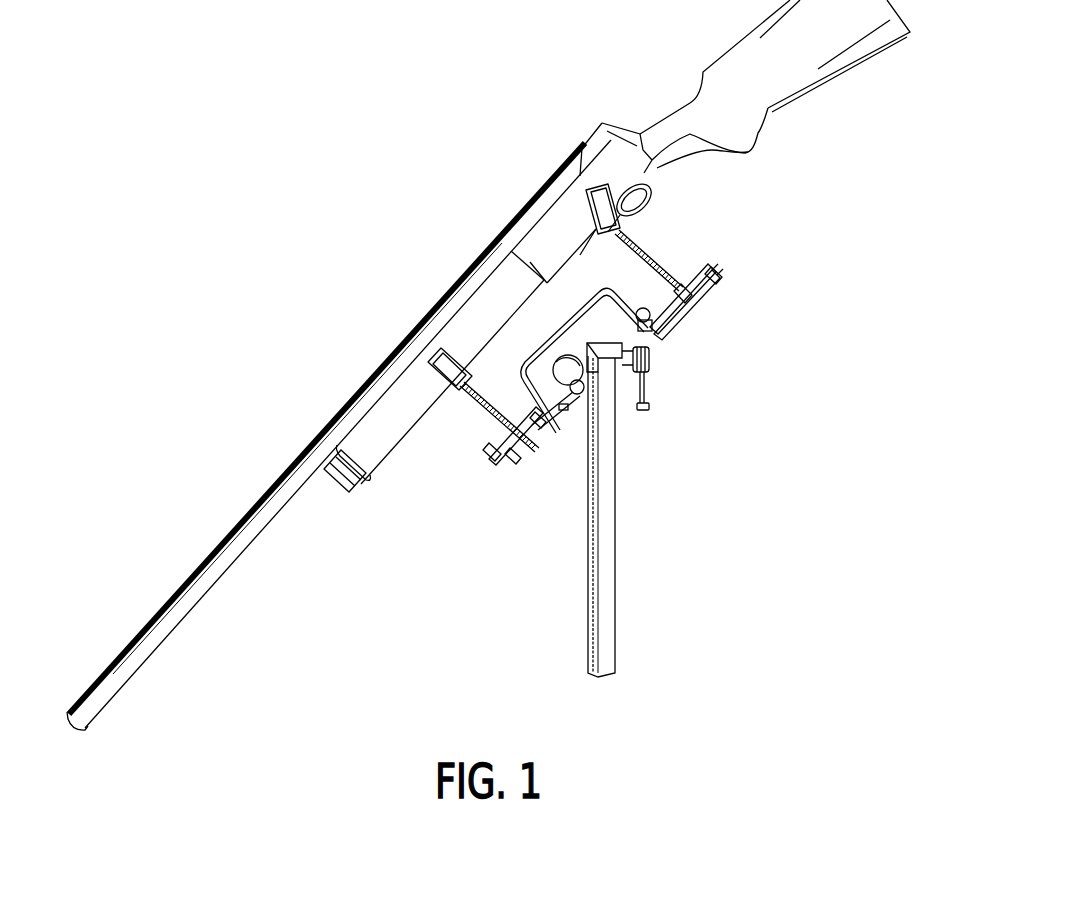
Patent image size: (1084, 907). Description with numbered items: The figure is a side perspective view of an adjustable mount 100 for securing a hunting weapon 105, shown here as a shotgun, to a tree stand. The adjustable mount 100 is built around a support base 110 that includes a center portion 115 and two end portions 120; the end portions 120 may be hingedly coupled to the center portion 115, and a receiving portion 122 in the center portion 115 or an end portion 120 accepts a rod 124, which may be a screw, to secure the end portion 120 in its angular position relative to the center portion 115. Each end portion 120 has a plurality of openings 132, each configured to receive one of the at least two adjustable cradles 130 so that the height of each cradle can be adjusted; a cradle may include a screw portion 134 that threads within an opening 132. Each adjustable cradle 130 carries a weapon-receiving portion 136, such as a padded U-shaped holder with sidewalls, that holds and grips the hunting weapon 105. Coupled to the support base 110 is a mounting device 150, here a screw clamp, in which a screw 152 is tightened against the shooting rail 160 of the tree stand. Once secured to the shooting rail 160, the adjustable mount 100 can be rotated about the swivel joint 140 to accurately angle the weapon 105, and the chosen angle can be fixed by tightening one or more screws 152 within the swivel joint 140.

The adjustable mount 100 is at (375, 117).
The hunting weapon 105 is at (607, 122).
The support base 110 is at (587, 285).
The center portion 115 is at (530, 360).
The end portions 120 is at (707, 273).
The receiving portion 122 is at (672, 327).
The rod 124 is at (712, 292).
The adjustable cradles 130 is at (650, 248).
The openings 132 is at (512, 460).
The screw portion 134 is at (488, 432).
The weapon-receiving portion 136 is at (590, 185).
The swivel joint 140 is at (567, 407).
The mounting device 150 is at (627, 346).
The screw 152 is at (650, 366).
The shooting rail 160 is at (616, 542).